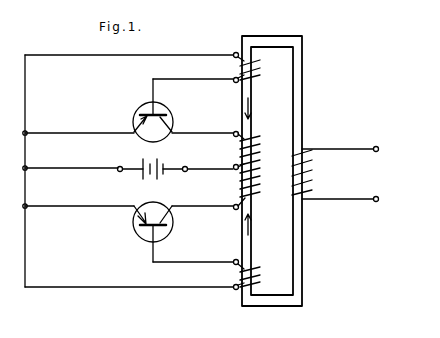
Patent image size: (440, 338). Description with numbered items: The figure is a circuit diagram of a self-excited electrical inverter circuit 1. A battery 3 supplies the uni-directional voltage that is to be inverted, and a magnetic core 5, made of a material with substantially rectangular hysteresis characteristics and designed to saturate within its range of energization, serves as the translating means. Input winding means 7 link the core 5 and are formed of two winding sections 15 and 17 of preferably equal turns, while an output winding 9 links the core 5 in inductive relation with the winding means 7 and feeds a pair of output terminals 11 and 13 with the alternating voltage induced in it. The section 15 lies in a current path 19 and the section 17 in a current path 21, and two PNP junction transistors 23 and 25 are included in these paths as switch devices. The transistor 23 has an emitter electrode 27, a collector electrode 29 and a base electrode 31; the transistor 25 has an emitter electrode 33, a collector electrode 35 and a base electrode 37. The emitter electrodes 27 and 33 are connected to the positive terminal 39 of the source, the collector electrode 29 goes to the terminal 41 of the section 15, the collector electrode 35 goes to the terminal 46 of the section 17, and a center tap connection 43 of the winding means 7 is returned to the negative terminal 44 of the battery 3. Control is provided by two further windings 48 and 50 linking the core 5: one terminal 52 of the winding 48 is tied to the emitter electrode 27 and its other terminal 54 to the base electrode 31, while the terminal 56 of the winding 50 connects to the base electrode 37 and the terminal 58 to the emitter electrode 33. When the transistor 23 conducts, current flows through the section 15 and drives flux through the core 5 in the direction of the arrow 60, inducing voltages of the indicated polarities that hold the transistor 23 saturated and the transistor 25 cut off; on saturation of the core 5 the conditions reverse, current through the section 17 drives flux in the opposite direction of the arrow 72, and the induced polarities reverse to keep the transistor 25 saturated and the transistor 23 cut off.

The electrical inverter circuit 1 is at (111, 311).
The battery 3 is at (160, 178).
The magnetic core 5 is at (304, 249).
The input winding means 7 is at (258, 173).
The output winding 9 is at (304, 173).
The output terminal 11 is at (377, 146).
The output terminal 13 is at (378, 201).
The winding section 15 is at (253, 139).
The winding section 17 is at (254, 199).
The current path 19 is at (91, 152).
The current path 21 is at (89, 200).
The switch device (PNP transistor) 23 is at (151, 110).
The switch device (PNP transistor) 25 is at (151, 230).
The emitter electrode 27 is at (134, 129).
The collector electrode 29 is at (173, 124).
The base electrode 31 is at (150, 103).
The emitter electrode 33 is at (134, 214).
The collector electrode 35 is at (173, 207).
The base electrode 37 is at (149, 238).
The positive terminal 39 is at (120, 171).
The terminal 41 is at (233, 133).
The center tap connection 43 is at (233, 165).
The negative terminal 44 is at (187, 171).
The terminal 46 is at (233, 209).
The winding 48 is at (252, 72).
The winding 50 is at (252, 270).
The terminal 52 is at (233, 53).
The terminal 54 is at (233, 78).
The terminal 56 is at (233, 260).
The terminal 58 is at (233, 285).
The arrow 60 is at (260, 108).
The arrow 72 is at (260, 229).